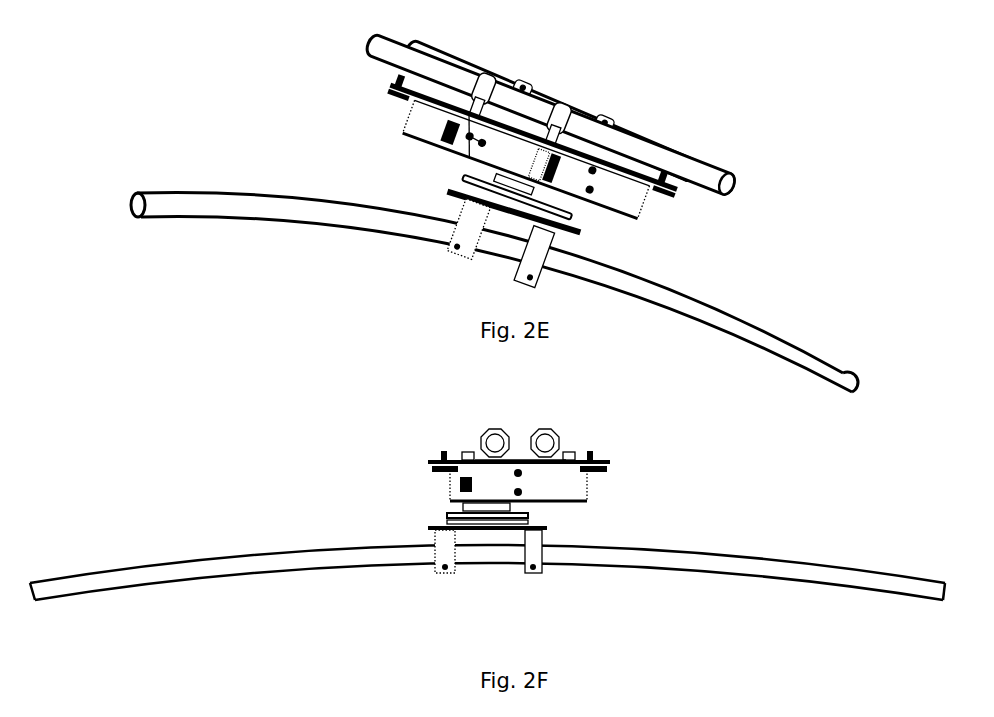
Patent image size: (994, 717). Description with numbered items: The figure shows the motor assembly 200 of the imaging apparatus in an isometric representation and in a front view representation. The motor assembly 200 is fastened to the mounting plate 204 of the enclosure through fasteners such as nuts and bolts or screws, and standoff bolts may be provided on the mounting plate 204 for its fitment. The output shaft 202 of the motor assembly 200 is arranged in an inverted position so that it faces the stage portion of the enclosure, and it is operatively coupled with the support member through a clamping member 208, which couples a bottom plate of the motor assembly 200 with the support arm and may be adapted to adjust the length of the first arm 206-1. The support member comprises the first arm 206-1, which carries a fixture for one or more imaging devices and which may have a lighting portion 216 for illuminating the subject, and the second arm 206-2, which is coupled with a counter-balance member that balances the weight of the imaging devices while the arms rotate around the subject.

In FIG. 2E, the motor assembly 200 is at (197, 42).
In FIG. 2F, the motor assembly 200 is at (206, 366).
In FIG. 2E, the output shaft 202 is at (490, 180).
In FIG. 2E, the mounting plate 204 is at (393, 78).
In FIG. 2F, the mounting plate 204 is at (428, 460).
In FIG. 2E, the first arm 206-1 is at (238, 218).
In FIG. 2F, the first arm 206-1 is at (218, 551).
In FIG. 2E, the second arm 206-2 is at (717, 335).
In FIG. 2F, the second arm 206-2 is at (770, 553).
In FIG. 2F, the clamping member 208 is at (428, 517).
In FIG. 2E, the lighting portion 216 is at (558, 206).